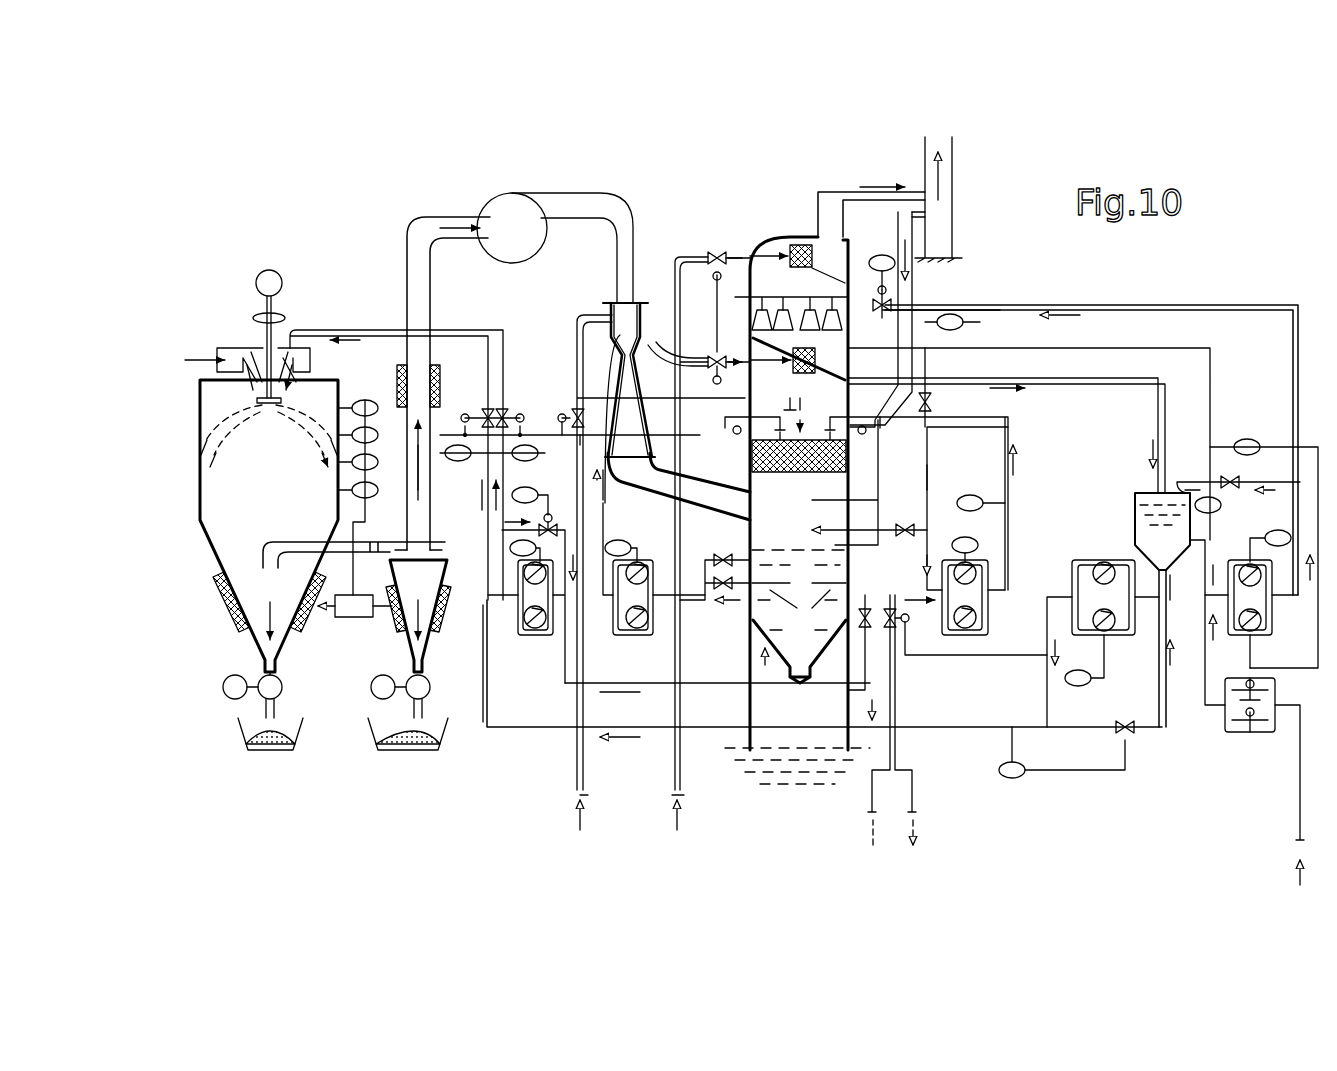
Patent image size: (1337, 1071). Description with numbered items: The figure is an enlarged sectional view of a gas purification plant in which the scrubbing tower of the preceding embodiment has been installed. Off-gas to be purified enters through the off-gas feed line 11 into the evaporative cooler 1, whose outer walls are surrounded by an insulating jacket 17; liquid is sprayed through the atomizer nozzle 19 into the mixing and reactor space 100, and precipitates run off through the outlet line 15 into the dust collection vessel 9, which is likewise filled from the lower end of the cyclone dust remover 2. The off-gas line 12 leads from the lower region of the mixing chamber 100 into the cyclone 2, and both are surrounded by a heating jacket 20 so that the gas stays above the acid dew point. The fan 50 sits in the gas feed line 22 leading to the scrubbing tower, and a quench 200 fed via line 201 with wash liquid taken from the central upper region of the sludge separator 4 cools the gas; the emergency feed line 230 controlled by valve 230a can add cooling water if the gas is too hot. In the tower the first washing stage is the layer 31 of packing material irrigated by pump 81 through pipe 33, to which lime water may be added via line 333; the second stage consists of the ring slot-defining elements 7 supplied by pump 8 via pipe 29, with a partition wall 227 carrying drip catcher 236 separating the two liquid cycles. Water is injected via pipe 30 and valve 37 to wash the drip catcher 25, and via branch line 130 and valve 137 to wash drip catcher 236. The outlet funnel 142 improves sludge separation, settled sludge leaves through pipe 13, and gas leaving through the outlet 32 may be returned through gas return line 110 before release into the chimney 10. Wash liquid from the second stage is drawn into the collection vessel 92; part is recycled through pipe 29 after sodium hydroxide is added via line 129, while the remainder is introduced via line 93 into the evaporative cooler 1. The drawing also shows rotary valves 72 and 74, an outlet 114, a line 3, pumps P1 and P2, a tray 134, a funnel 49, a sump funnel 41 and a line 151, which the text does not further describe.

The evaporative cooler 1 is at (222, 600).
The mixing and reactor space 100 is at (272, 484).
The off-gas feed line 11 is at (232, 358).
The atomizer nozzle 19 is at (269, 405).
The insulating jacket 17 is at (300, 612).
The rotary valve 72 is at (282, 687).
The outlet line 15 is at (264, 709).
The dust collection vessel 9 is at (300, 745).
The off-gas line 12 is at (298, 542).
The cyclone dust remover 2 is at (418, 558).
The heating jacket 20 is at (393, 615).
The cyclone rotary valve 74 is at (430, 687).
The cyclone outlet 114 is at (412, 709).
The gas feed line 22 is at (460, 240).
The fan 50 is at (522, 262).
The quench 200 is at (612, 298).
The pipe 13 is at (382, 330).
The line 93 is at (484, 626).
The valve 230a is at (575, 416).
The feed line 230 is at (700, 400).
The pipe 30 is at (676, 292).
The valve 37 is at (717, 248).
The valve 137 is at (722, 352).
The branch line 130 is at (694, 358).
The line 201 is at (605, 490).
The pump 1 P1 is at (530, 585).
The outlet funnel 142 is at (755, 605).
The sludge separator 4 is at (752, 690).
The outlet 32 is at (843, 236).
The chimney 10 is at (952, 188).
The bypass pipe 3 is at (855, 413).
The ring slot-defining elements 7 is at (788, 312).
The drip catcher 25 is at (812, 260).
The partition wall 227 is at (802, 354).
The drip catcher 236 is at (810, 352).
The layer of packing material 31 is at (810, 440).
The pipe 33 is at (737, 434).
The gas return line 110 is at (878, 475).
The collecting tray 134 is at (770, 565).
The funnel 49 is at (830, 585).
The sump funnel 41 is at (810, 652).
The pump 81 is at (972, 577).
The line 333 is at (897, 692).
The pipe 29 is at (1185, 304).
The liquid pipe 151 is at (852, 392).
The collection vessel 92 is at (1135, 528).
The pump 2 P2 is at (1079, 669).
The pump 8 is at (1262, 578).
The line 129 is at (1300, 770).